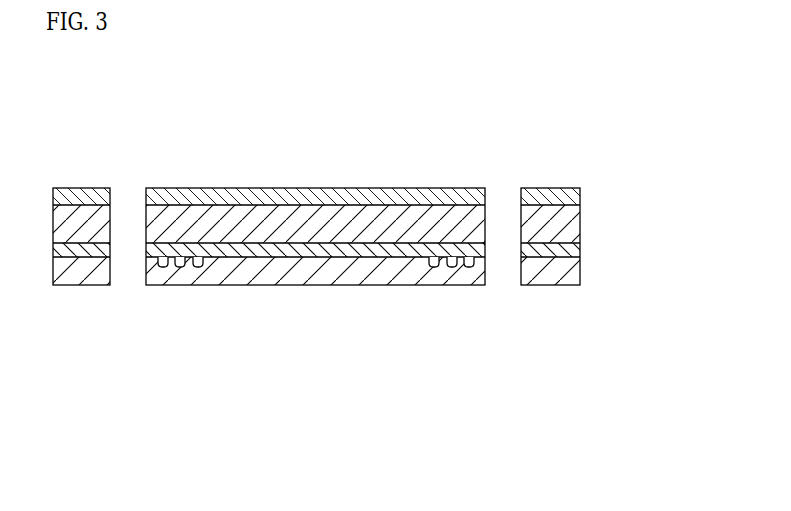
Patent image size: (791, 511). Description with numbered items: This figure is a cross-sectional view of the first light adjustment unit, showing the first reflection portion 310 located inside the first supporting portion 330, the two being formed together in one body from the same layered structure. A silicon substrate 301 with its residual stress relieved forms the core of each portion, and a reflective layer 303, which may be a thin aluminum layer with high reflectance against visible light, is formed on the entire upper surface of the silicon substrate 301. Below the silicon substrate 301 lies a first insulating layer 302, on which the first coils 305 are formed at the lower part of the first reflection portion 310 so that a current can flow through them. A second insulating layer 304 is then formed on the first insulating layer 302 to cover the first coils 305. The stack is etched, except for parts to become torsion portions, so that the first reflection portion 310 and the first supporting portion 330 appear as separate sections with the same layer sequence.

The first reflection portion 310 is at (323, 146).
The first supporting portion 330 is at (593, 191).
The silicon substrate 301 is at (578, 226).
The first insulating layer 302 is at (580, 249).
The reflective layer 303 is at (580, 191).
The second insulating layer 304 is at (578, 273).
The first coils 305 is at (166, 266).